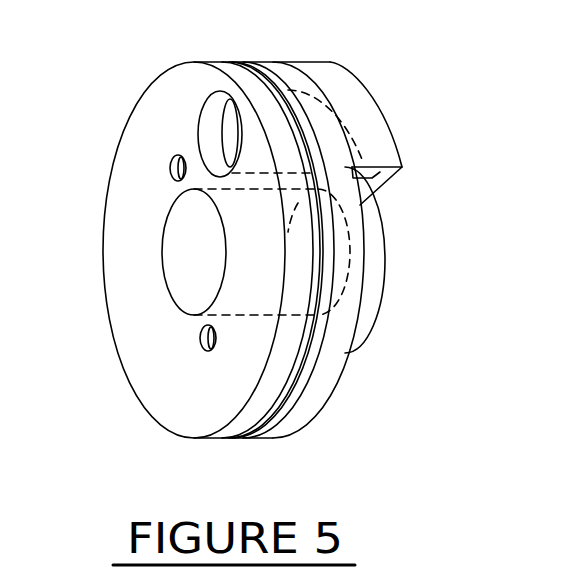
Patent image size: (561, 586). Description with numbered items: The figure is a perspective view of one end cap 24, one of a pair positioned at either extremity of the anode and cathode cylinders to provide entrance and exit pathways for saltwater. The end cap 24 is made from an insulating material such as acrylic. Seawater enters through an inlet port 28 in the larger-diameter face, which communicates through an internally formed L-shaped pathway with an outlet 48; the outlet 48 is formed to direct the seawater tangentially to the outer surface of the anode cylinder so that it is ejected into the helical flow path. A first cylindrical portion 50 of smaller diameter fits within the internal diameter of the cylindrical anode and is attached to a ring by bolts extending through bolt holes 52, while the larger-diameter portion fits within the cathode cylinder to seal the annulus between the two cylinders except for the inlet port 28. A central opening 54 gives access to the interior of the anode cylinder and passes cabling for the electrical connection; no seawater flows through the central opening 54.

The end cap 24 is at (155, 115).
The inlet port 28 is at (210, 122).
The outlet 48 is at (373, 180).
The first cylindrical portion 50 is at (372, 270).
The bolt holes 52 is at (168, 167).
The central opening 54 is at (186, 253).